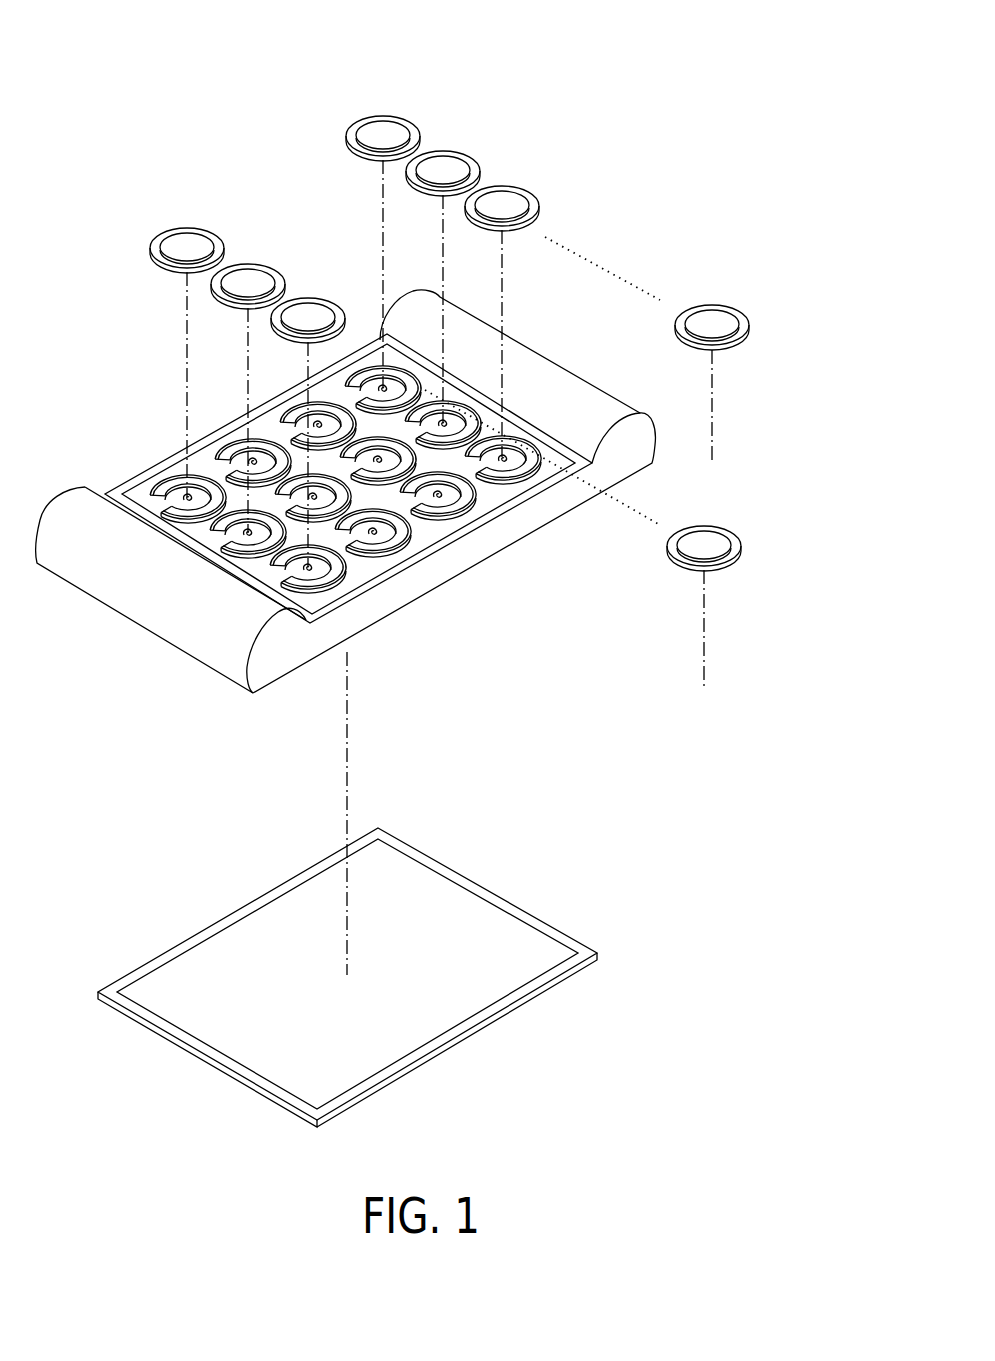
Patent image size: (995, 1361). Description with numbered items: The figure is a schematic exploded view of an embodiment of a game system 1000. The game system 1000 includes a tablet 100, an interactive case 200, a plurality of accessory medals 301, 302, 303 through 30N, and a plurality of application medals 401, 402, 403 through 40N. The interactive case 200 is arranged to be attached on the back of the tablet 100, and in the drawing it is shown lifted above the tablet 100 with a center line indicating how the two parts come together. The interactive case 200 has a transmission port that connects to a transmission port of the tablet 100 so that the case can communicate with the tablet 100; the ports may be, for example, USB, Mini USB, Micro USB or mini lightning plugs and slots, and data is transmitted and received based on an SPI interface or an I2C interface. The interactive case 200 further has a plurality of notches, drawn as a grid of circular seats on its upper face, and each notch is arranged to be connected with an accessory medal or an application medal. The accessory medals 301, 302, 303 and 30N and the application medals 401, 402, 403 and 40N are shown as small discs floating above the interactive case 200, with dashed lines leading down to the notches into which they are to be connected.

The game system 1000 is at (703, 83).
The tablet 100 is at (568, 937).
The interactive case 200 is at (567, 370).
The accessory medal 301 is at (415, 122).
The accessory medal 302 is at (475, 157).
The accessory medal 303 is at (535, 192).
The accessory medal 30N is at (747, 312).
The application medal 401 is at (190, 230).
The application medal 402 is at (249, 264).
The application medal 403 is at (310, 298).
The application medal 40N is at (737, 543).